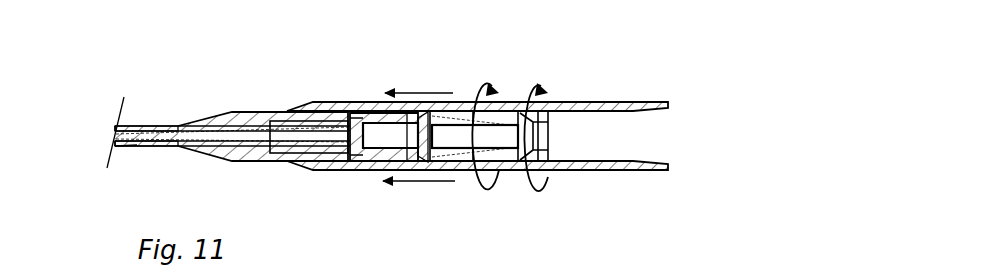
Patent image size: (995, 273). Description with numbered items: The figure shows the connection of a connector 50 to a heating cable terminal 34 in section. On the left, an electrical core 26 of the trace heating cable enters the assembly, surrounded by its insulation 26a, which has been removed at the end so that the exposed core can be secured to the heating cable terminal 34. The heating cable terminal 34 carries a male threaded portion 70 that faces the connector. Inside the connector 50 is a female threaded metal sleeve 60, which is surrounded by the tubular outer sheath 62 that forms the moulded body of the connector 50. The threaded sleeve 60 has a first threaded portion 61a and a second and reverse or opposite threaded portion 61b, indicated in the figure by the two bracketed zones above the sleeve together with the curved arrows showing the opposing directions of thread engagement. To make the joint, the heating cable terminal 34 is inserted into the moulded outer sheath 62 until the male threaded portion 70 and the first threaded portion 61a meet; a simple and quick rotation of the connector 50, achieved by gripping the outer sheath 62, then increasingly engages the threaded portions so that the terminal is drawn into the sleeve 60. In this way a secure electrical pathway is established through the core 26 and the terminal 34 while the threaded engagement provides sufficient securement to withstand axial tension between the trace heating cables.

The electrical core 26 is at (117, 138).
The insulation 26a is at (137, 145).
The male threaded portion 70 is at (407, 85).
The tubular outer sheath 62 is at (613, 108).
The connector 50 is at (633, 174).
The heating cable terminal 34 is at (380, 140).
The female threaded metal sleeve 60 is at (458, 130).
The first threaded portion 61a is at (473, 85).
The second threaded portion 61b is at (476, 76).